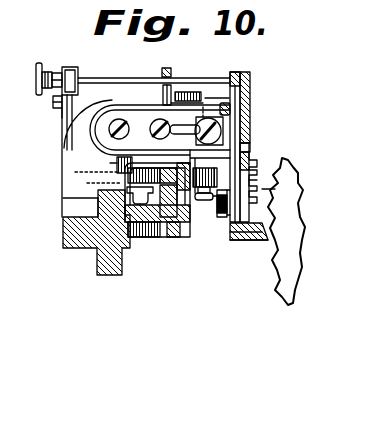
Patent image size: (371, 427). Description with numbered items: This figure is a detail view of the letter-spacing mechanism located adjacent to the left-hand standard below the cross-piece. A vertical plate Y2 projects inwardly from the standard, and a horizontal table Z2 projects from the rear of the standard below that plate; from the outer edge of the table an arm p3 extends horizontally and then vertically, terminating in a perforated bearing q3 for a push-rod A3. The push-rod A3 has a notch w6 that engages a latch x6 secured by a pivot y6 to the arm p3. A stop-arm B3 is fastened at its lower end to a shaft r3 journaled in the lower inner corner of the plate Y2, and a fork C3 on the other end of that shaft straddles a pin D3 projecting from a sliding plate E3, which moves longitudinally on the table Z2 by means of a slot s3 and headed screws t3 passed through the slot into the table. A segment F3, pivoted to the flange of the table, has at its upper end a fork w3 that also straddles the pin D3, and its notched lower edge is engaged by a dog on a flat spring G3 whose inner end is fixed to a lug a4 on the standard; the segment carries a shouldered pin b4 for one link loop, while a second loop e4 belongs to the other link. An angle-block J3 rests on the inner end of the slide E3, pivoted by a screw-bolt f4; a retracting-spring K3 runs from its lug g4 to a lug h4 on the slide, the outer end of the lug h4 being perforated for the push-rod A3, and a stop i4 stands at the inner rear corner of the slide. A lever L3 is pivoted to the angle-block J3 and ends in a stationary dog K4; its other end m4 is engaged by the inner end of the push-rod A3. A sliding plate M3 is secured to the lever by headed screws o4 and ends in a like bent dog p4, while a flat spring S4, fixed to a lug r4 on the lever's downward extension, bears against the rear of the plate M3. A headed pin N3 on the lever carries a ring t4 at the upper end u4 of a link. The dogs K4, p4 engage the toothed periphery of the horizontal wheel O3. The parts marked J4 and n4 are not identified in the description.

The notch w6 is at (58, 72).
The perforated bearing q3 is at (78, 72).
The push-rod A3 is at (123, 79).
The arm p3 is at (72, 100).
The pivot y6 is at (57, 104).
The latch x6 is at (62, 97).
The lug h4 is at (163, 92).
The retracting-spring K3 is at (196, 92).
The sliding plate E3 is at (160, 130).
The headed screws t3 is at (122, 124).
The slot s3 is at (186, 126).
The screw-bolt f4 is at (210, 118).
The end of lever m4 is at (245, 69).
The vertical lug or stop i4 is at (243, 88).
The rearward-projecting lug g4 is at (245, 92).
The angle-block J3 is at (240, 108).
The housing wall J4 is at (243, 121).
The lug r4 is at (248, 136).
The flat spring S4 is at (250, 154).
The segment F3 is at (249, 160).
The headed screws o4 is at (258, 164).
The upper end of link u4 is at (252, 182).
The sliding plate M3 is at (257, 190).
The foot n4 is at (262, 229).
The bent dog p4 is at (262, 241).
The wheel O3 is at (290, 275).
The shouldered pin b4 is at (204, 194).
The lug a4 is at (216, 210).
The ring or eye t4 is at (223, 218).
The lever L3 is at (233, 232).
The headed pin N3 is at (241, 242).
The stationary dog K4 is at (228, 238).
The stop-arm B3 is at (132, 237).
The fork w3 is at (170, 151).
The pin D3 is at (97, 176).
The vertical plate Y2 is at (144, 237).
The fork C3 is at (165, 225).
The shaft r3 is at (178, 232).
The horizontal plate or table Z2 is at (63, 207).
The flat spring G3 is at (98, 183).
The loop e4 is at (100, 200).